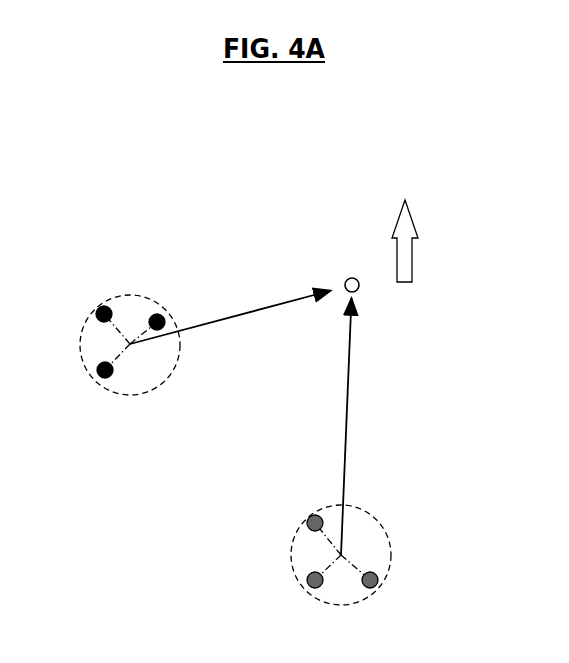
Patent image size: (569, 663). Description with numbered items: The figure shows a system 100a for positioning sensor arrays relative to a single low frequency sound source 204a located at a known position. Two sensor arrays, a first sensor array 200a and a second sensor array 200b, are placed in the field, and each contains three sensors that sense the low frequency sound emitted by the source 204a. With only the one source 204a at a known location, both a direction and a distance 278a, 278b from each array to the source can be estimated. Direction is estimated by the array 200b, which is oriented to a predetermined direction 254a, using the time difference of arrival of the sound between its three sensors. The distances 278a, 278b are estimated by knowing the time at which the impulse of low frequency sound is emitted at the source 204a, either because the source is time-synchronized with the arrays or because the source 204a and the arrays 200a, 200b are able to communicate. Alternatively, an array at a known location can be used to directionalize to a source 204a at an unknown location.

The system 100a is at (385, 158).
The sensor array 200a is at (123, 272).
The sensor array 200b is at (266, 526).
The source 204a is at (352, 277).
The predetermined direction 254a is at (407, 265).
The distance 278a is at (263, 305).
The distance 278b is at (348, 410).